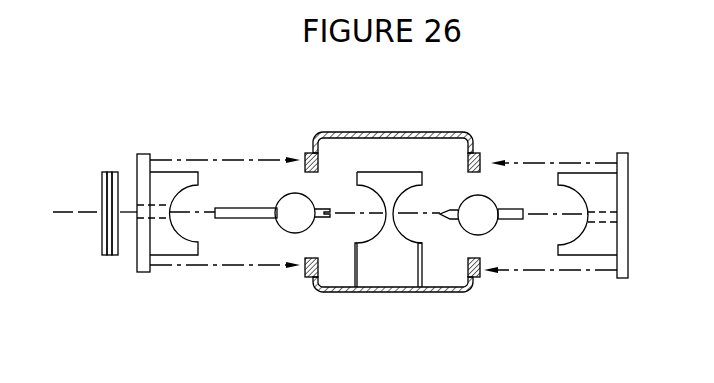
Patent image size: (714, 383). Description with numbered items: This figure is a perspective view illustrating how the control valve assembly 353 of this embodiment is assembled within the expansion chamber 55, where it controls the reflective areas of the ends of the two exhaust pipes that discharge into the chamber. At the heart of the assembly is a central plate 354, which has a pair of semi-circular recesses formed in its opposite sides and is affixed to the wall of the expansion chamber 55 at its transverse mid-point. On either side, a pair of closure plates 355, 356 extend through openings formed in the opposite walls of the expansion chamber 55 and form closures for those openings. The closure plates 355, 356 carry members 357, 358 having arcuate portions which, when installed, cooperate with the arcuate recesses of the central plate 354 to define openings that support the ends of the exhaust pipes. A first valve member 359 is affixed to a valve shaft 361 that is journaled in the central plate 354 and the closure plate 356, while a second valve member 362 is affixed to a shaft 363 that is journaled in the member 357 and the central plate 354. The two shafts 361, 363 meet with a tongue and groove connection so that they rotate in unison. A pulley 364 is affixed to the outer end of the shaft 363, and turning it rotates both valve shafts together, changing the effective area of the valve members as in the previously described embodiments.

The expansion chamber 55 is at (373, 132).
The control valve assembly 353 is at (486, 113).
The central plate 354 is at (392, 172).
The closure plate 355 is at (137, 272).
The closure plate 356 is at (628, 268).
The member 357 is at (180, 160).
The member 358 is at (577, 173).
The first valve member 359 is at (493, 200).
The valve shaft 361 is at (522, 221).
The second valve member 362 is at (287, 194).
The shaft 363 is at (242, 220).
The pulley 364 is at (100, 245).